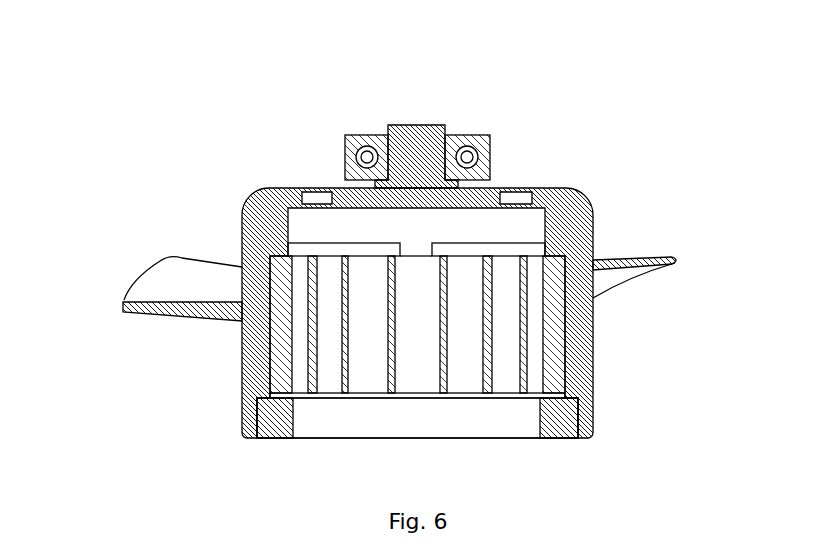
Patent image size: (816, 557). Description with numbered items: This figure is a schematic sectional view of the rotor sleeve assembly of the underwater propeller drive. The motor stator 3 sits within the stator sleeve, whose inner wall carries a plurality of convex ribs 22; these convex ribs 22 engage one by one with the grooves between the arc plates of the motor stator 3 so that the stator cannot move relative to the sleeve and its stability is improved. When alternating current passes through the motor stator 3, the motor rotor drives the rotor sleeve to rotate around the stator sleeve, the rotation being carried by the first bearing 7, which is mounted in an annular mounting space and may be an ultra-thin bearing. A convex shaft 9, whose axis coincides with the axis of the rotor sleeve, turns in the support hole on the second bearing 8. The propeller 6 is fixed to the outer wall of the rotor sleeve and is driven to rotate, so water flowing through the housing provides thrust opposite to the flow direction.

The motor stator 3 is at (290, 317).
The propeller 6 is at (640, 268).
The first bearing 7 is at (567, 425).
The second bearing 8 is at (476, 156).
The convex shaft 9 is at (425, 150).
The convex ribs 22 is at (343, 288).